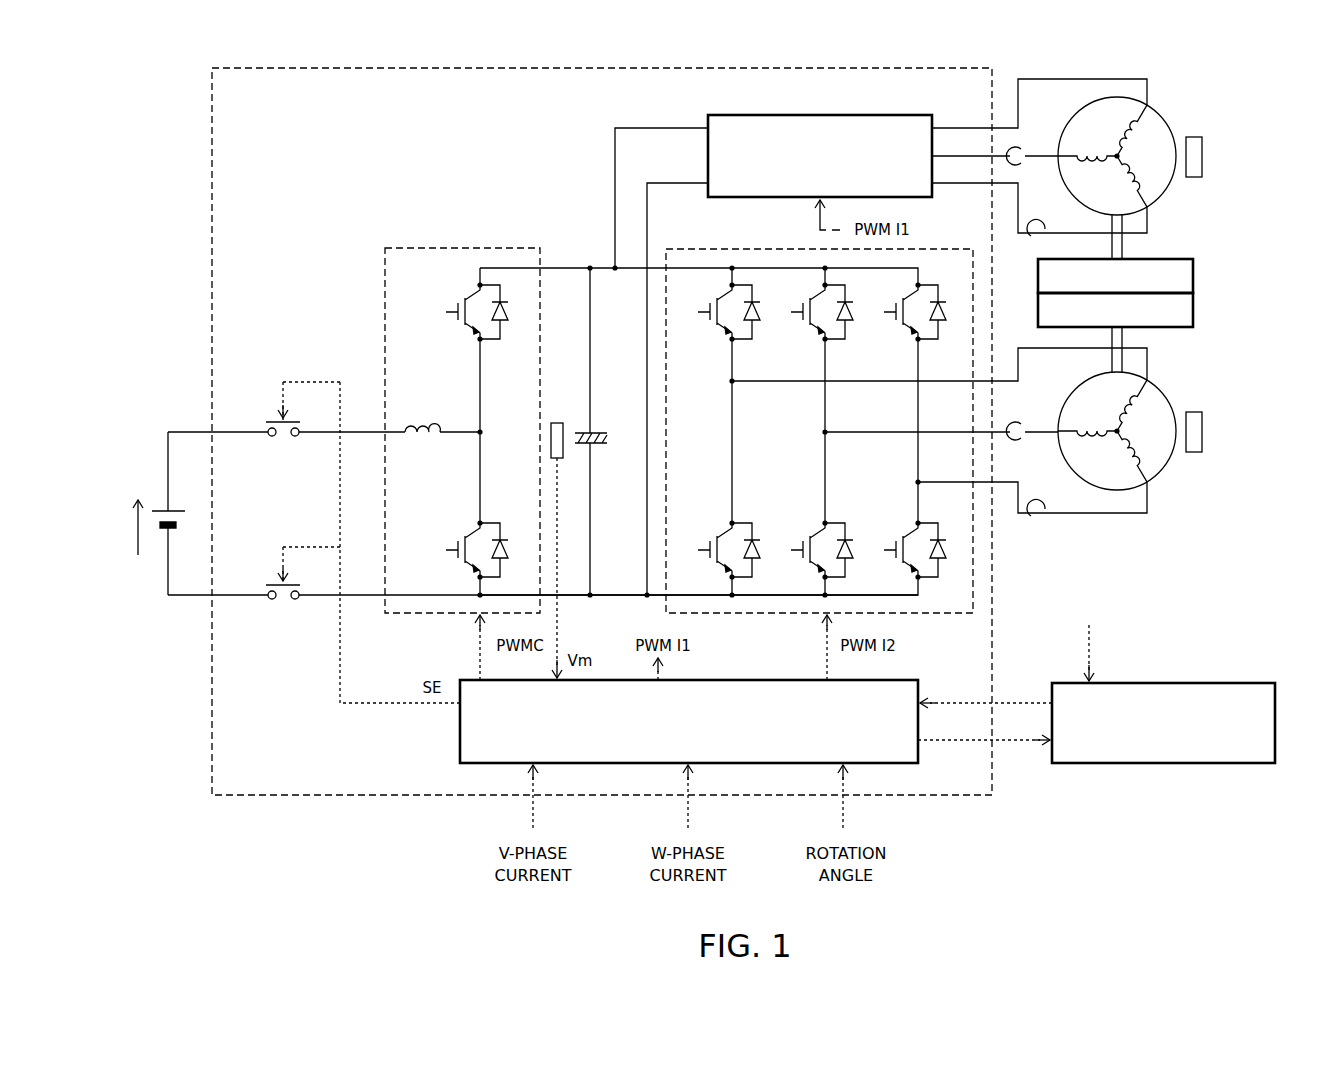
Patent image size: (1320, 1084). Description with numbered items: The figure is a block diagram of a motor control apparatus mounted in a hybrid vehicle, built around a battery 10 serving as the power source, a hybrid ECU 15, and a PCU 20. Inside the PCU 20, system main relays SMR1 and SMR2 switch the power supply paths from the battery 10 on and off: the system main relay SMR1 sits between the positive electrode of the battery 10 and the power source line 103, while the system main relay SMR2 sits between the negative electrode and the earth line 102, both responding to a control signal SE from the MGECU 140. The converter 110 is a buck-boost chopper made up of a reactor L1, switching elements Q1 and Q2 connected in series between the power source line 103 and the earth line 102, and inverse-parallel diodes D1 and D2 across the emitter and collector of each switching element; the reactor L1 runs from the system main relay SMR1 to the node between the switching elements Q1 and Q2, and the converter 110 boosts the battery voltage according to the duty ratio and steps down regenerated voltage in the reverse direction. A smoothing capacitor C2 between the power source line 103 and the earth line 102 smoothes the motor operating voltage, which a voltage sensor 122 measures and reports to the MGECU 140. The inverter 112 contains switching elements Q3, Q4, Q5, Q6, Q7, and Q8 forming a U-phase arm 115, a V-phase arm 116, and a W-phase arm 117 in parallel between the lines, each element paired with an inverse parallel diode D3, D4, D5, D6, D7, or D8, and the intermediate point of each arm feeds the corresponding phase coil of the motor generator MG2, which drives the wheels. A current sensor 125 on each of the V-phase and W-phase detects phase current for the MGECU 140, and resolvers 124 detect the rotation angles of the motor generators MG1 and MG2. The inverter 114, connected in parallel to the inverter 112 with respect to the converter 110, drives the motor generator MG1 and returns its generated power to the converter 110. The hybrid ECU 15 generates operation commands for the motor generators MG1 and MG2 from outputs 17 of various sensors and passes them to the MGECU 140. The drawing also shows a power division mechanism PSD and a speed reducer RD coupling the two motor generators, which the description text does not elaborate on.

The battery 10 is at (156, 508).
The PCU (power control unit) 20 is at (212, 210).
The converter 110 is at (478, 248).
The inverter 112 is at (935, 249).
The inverter 114 is at (797, 115).
The power source line 103 is at (562, 268).
The earth line 102 is at (620, 597).
The voltage sensor 122 is at (557, 423).
The U-phase arm 115 is at (686, 393).
The V-phase arm 116 is at (778, 443).
The W-phase arm 117 is at (876, 490).
The resolver 124 is at (1195, 137).
The current sensor 125 is at (1024, 146).
The MGECU 140 is at (920, 680).
The hybrid ECU 15 is at (1238, 763).
The outputs from various sensors 17 is at (1089, 668).
The system main relay SMR1 is at (286, 440).
The system main relay SMR2 is at (286, 603).
The reactor L1 is at (423, 414).
The smoothing capacitor C2 is at (600, 432).
The switching element Q1 is at (450, 312).
The switching element Q2 is at (450, 550).
The switching element Q3 is at (704, 312).
The switching element Q4 is at (704, 550).
The switching element Q5 is at (798, 312).
The switching element Q6 is at (798, 550).
The switching element Q7 is at (892, 312).
The switching element Q8 is at (896, 550).
The diode D1 is at (503, 322).
The diode D2 is at (508, 542).
The inverse parallel diode D3 is at (755, 308).
The inverse parallel diode D4 is at (758, 542).
The inverse parallel diode D5 is at (848, 308).
The inverse parallel diode D6 is at (850, 542).
The inverse parallel diode D7 is at (942, 322).
The inverse parallel diode D8 is at (946, 542).
The motor generator MG1 is at (1160, 108).
The motor generator MG2 is at (1162, 387).
The power division mechanism PSD is at (1193, 273).
The speed reducer RD is at (1193, 310).